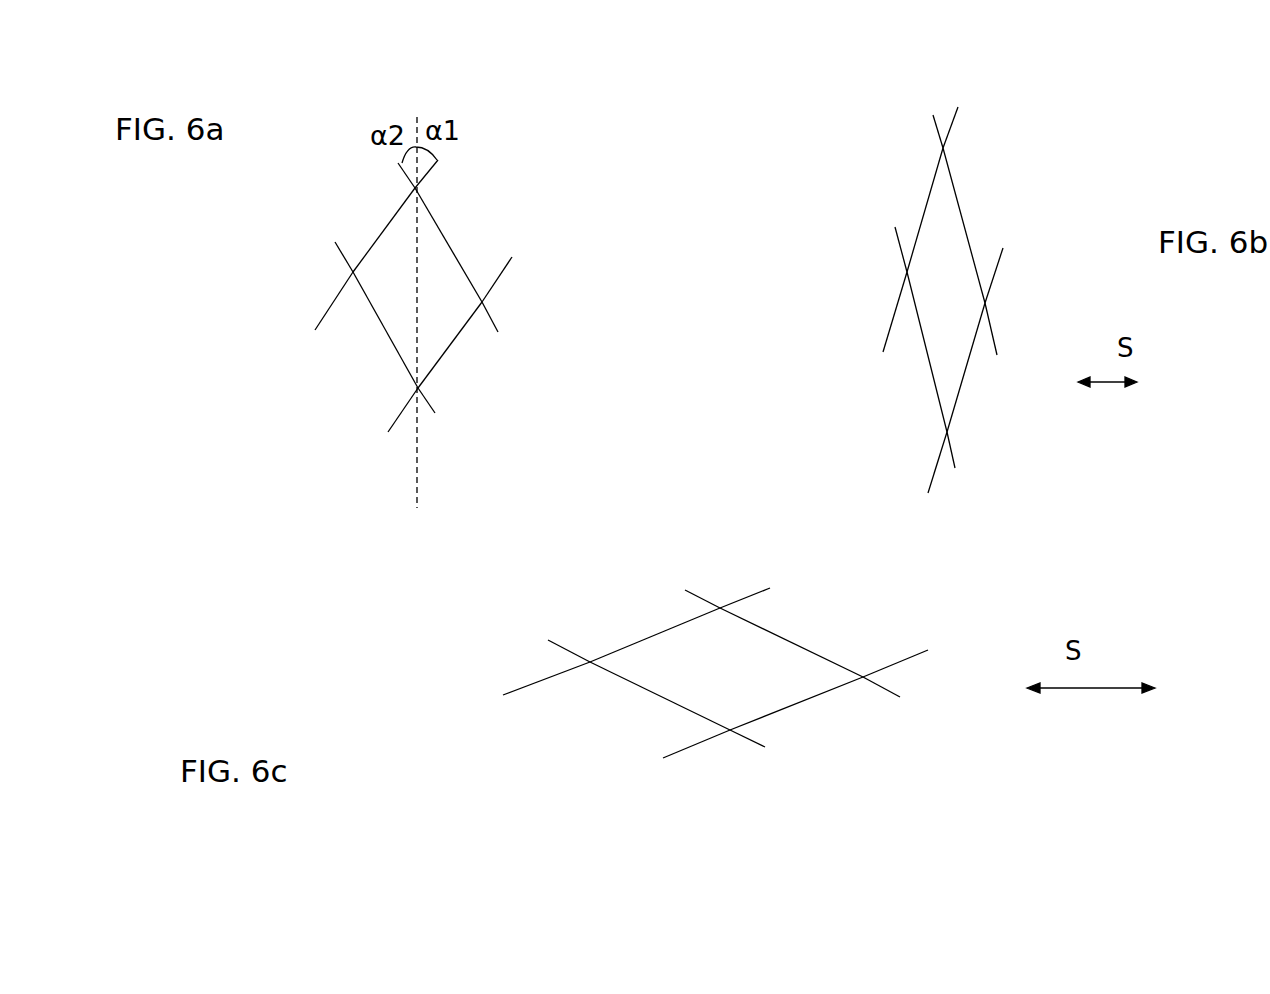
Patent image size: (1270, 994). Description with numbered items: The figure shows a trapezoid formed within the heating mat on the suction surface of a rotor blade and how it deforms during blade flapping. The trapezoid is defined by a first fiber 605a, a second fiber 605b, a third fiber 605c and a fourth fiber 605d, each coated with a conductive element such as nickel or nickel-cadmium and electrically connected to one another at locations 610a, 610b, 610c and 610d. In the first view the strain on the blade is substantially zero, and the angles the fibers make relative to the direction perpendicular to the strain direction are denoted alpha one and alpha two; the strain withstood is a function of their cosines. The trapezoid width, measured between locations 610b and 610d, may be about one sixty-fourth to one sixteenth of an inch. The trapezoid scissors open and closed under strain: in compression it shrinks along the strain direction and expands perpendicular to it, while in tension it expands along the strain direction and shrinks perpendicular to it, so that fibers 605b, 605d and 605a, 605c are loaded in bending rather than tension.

In FIG. 6A, the first fiber 605a is at (447, 243).
In FIG. 6B, the first fiber 605a is at (962, 220).
In FIG. 6C, the first fiber 605a is at (780, 636).
In FIG. 6A, the second fiber 605b is at (452, 340).
In FIG. 6B, the second fiber 605b is at (965, 373).
In FIG. 6C, the second fiber 605b is at (795, 704).
In FIG. 6A, the third fiber 605c is at (390, 340).
In FIG. 6B, the third fiber 605c is at (925, 350).
In FIG. 6C, the third fiber 605c is at (650, 692).
In FIG. 6A, the fourth fiber 605d is at (382, 230).
In FIG. 6B, the fourth fiber 605d is at (922, 217).
In FIG. 6C, the fourth fiber 605d is at (672, 627).
In FIG. 6A, the location 610a is at (415, 188).
In FIG. 6B, the location 610a is at (943, 148).
In FIG. 6C, the location 610a is at (720, 608).
In FIG. 6A, the location 610b is at (482, 302).
In FIG. 6B, the location 610b is at (985, 303).
In FIG. 6C, the location 610b is at (863, 677).
In FIG. 6A, the location 610c is at (418, 388).
In FIG. 6B, the location 610c is at (947, 432).
In FIG. 6C, the location 610c is at (730, 730).
In FIG. 6A, the location 610d is at (353, 272).
In FIG. 6B, the location 610d is at (907, 272).
In FIG. 6C, the location 610d is at (590, 662).